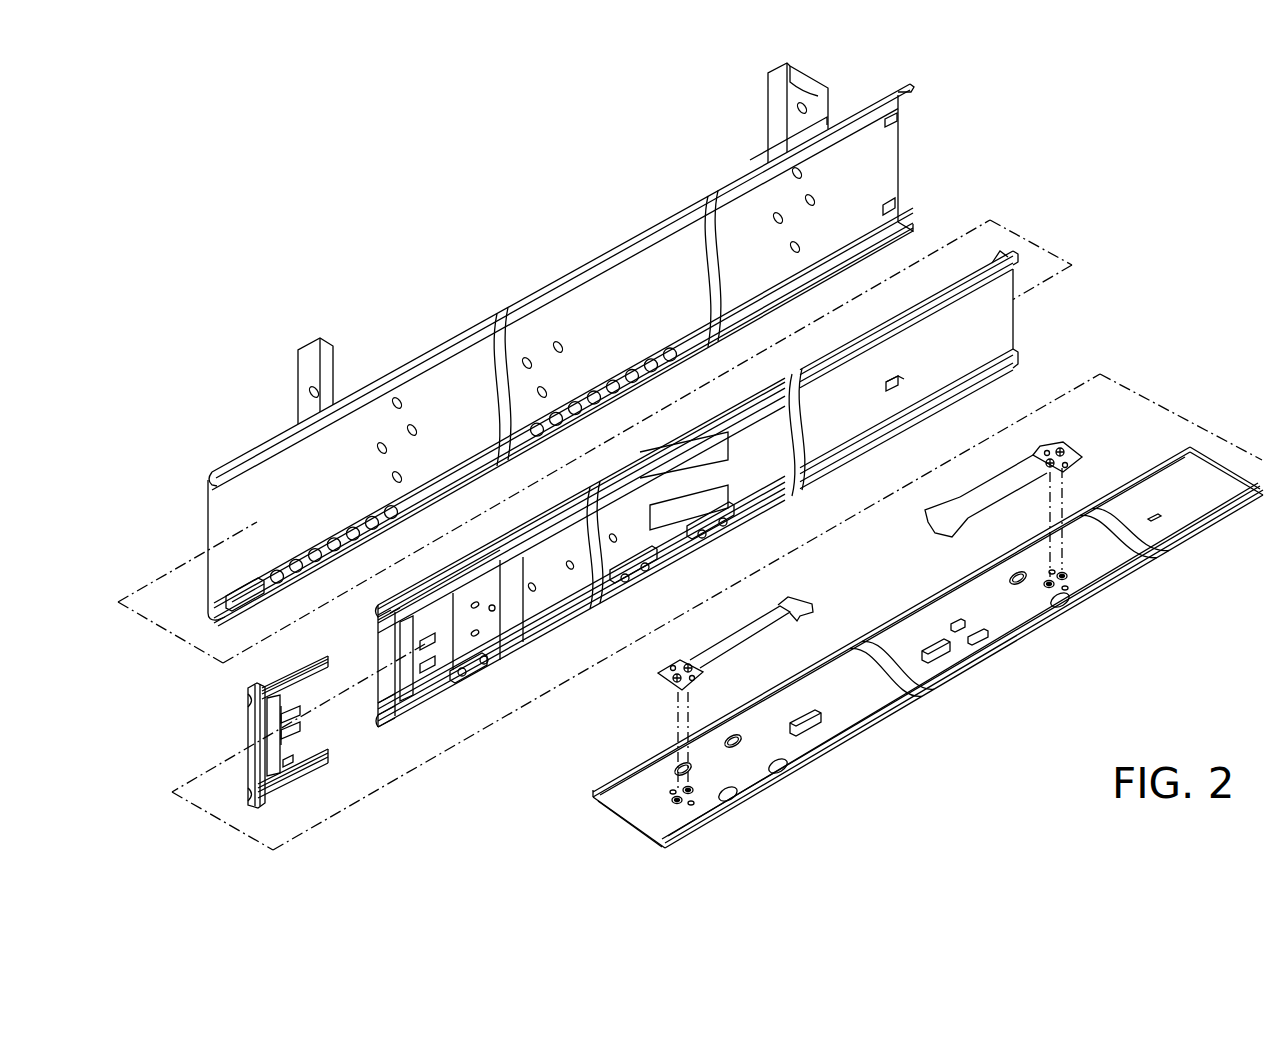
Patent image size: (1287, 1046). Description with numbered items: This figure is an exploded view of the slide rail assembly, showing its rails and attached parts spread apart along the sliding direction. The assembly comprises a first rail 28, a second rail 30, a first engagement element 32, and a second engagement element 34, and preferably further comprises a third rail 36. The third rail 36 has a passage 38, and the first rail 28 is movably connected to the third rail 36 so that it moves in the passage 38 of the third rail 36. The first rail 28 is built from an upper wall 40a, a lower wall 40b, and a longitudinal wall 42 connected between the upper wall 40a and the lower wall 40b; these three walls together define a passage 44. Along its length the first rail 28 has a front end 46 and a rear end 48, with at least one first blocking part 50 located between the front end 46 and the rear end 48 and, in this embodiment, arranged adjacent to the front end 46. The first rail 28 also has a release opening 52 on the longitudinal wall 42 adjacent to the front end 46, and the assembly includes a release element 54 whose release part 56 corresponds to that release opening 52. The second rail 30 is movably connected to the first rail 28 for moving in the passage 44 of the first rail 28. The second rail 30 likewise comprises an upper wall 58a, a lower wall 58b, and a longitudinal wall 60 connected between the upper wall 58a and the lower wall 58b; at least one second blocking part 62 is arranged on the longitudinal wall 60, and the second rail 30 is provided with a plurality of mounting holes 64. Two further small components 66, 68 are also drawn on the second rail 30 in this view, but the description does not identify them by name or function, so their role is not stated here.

The first rail 28 is at (1058, 329).
The second rail 30 is at (1098, 688).
The first engagement element 32 is at (658, 688).
The second engagement element 34 is at (1080, 440).
The third rail 36 is at (571, 257).
The passage 38 is at (232, 510).
The upper wall 40a is at (777, 388).
The lower wall 40b is at (760, 513).
The longitudinal wall 42 is at (386, 657).
The passage 44 is at (1003, 329).
The front end 46 is at (390, 640).
The rear end 48 is at (965, 328).
The first blocking part 50 is at (421, 664).
The release opening 52 is at (423, 663).
The release element 54 is at (232, 703).
The release part 56 is at (298, 712).
The upper wall 58a is at (935, 694).
The lower wall 58b is at (898, 630).
The longitudinal wall 60 is at (878, 700).
The second blocking part 62 is at (990, 636).
The mounting holes 64 is at (740, 808).
The first block 66 is at (813, 724).
The second block 68 is at (950, 657).